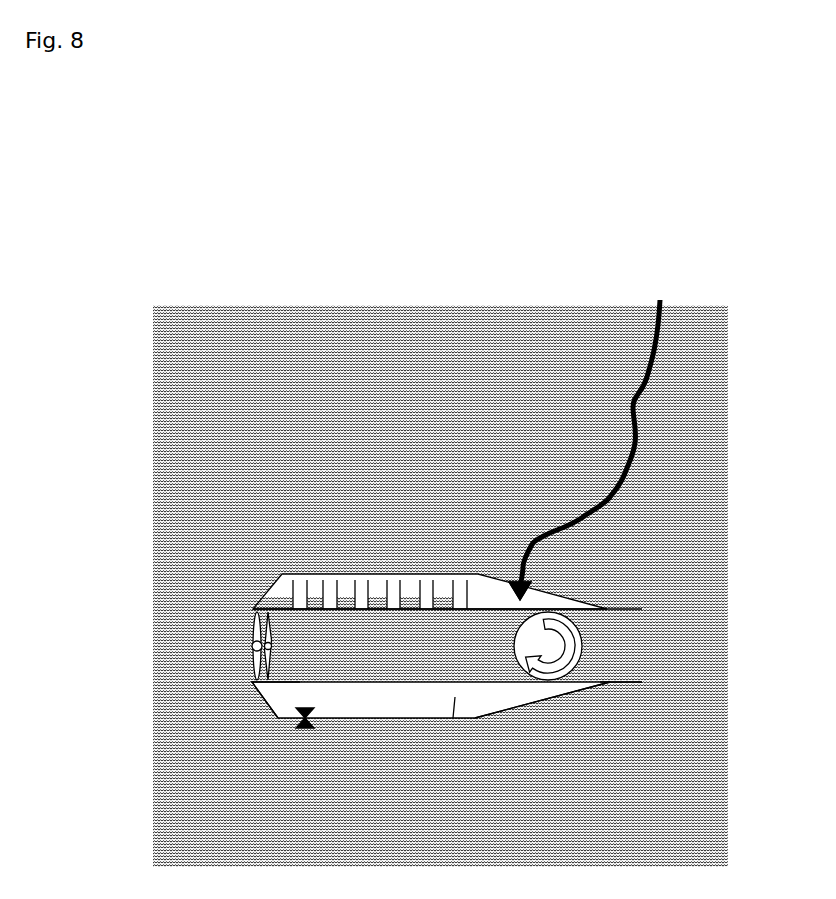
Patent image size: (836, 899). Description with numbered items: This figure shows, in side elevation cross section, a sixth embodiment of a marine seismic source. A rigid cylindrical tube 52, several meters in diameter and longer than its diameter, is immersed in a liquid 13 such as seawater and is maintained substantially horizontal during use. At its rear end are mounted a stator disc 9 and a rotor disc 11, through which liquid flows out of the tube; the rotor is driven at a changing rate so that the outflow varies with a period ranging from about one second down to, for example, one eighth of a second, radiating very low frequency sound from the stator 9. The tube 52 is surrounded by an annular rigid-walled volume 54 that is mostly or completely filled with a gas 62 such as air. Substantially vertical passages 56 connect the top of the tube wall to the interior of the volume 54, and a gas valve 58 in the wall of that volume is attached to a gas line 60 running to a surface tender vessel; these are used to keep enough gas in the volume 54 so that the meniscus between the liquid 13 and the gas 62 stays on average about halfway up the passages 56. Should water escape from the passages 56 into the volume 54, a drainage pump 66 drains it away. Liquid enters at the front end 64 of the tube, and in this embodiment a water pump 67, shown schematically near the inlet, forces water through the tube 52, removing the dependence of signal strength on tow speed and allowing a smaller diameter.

The stator disc 9 is at (253, 632).
The rotor disc 11 is at (262, 688).
The liquid 13 is at (440, 586).
The rigid cylindrical tube 52 is at (625, 684).
The annular rigid-walled volume 54 is at (388, 718).
The passages 56 is at (300, 600).
The gas valve 58 is at (517, 590).
The gas line 60 is at (612, 487).
The gas 62 is at (453, 718).
The front end 64 is at (641, 684).
The drainage pump 66 is at (304, 728).
The water pump 67 is at (582, 645).